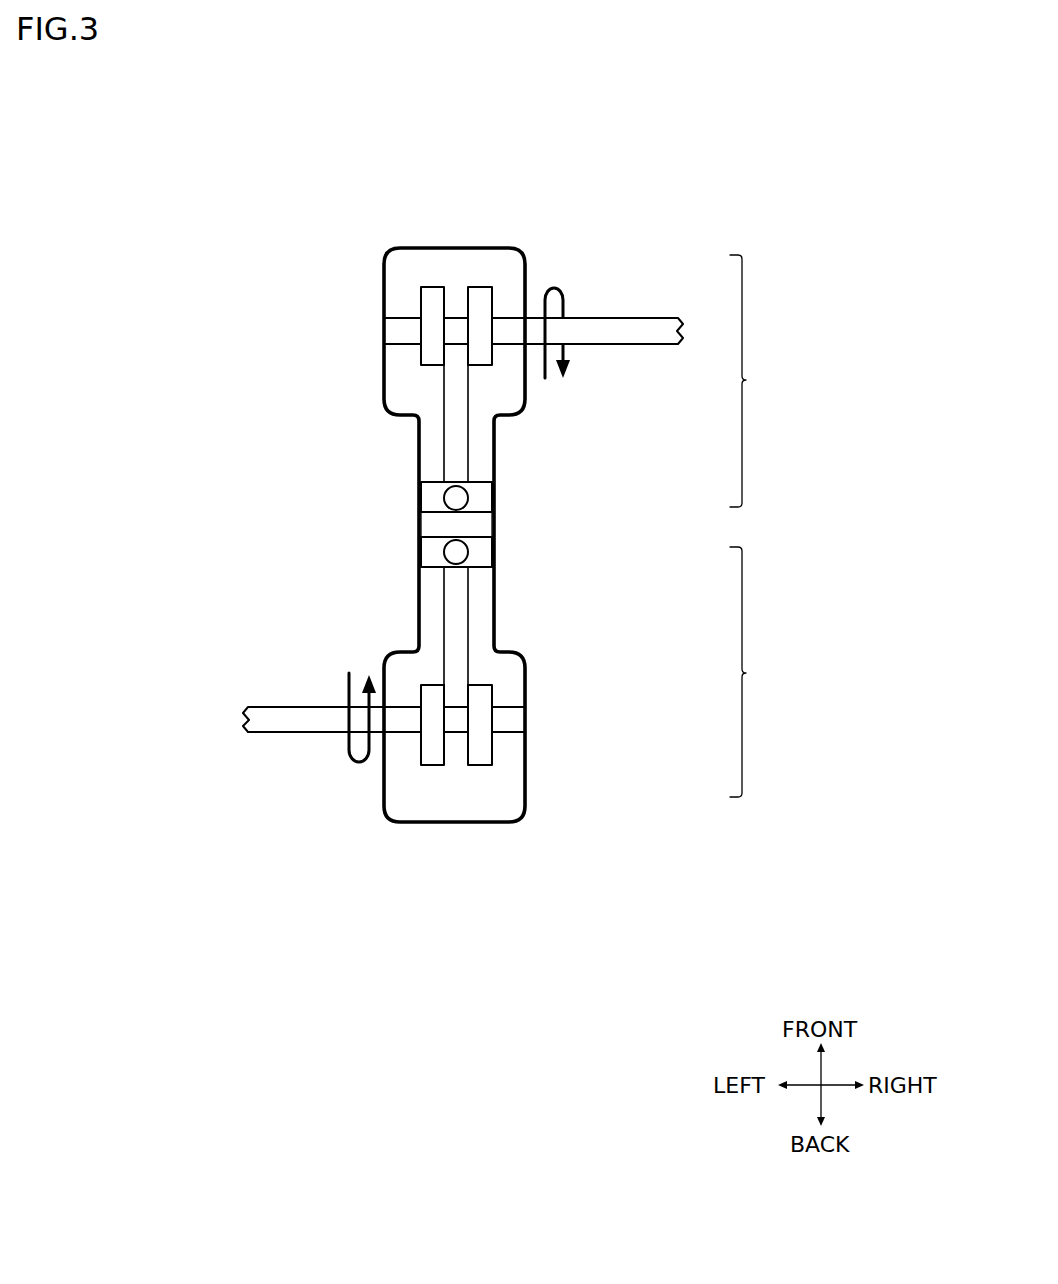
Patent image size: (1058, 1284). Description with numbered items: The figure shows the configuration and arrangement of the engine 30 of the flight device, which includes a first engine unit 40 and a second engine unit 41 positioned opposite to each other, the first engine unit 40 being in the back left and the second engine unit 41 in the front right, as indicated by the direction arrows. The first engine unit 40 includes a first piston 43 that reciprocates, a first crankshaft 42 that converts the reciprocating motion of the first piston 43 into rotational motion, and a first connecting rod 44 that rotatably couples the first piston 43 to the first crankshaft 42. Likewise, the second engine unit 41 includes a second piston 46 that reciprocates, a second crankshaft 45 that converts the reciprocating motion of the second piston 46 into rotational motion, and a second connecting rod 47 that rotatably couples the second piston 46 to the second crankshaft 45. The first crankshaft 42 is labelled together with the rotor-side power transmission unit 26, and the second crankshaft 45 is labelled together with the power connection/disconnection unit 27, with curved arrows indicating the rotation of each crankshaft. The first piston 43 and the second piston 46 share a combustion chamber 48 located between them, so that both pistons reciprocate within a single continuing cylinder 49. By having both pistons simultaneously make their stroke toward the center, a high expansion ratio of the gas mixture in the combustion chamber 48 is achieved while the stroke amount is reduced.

The engine 30 is at (406, 195).
The first engine unit 40 is at (758, 672).
The second engine unit 41 is at (758, 381).
The first crankshaft 42 is at (315, 733).
The rotor-side power transmission unit 26 is at (384, 719).
The first piston 43 is at (435, 570).
The first connecting rod 44 is at (455, 638).
The second crankshaft 45 is at (576, 317).
The power connection/disconnection unit 27 is at (533, 332).
The second piston 46 is at (433, 489).
The second connecting rod 47 is at (455, 442).
The combustion chamber 48 is at (480, 520).
The cylinder 49 is at (496, 460).